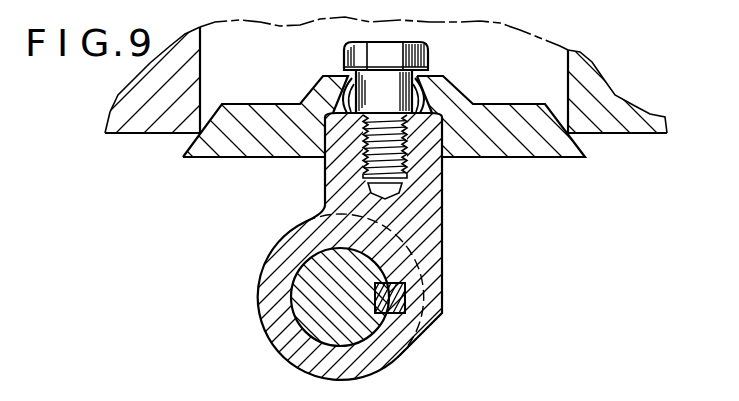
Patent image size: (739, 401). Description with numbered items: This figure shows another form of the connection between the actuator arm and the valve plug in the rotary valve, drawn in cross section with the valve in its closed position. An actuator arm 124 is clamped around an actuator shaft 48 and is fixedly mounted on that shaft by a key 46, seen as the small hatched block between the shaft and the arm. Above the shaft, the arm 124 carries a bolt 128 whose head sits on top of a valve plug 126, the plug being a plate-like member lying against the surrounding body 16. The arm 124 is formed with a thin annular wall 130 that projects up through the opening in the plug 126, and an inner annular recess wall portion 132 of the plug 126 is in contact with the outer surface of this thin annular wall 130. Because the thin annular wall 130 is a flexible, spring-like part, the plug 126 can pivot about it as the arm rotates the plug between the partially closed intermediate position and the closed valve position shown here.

The vehicle body panel 16 is at (613, 122).
The key 46 is at (403, 305).
The actuator shaft 48 is at (358, 332).
The actuator arm 124 is at (437, 247).
The valve plug 126 is at (540, 148).
The bolt 128 is at (395, 53).
The thin annular wall 130 is at (433, 105).
The inner annular recess wall portion 132 is at (428, 92).